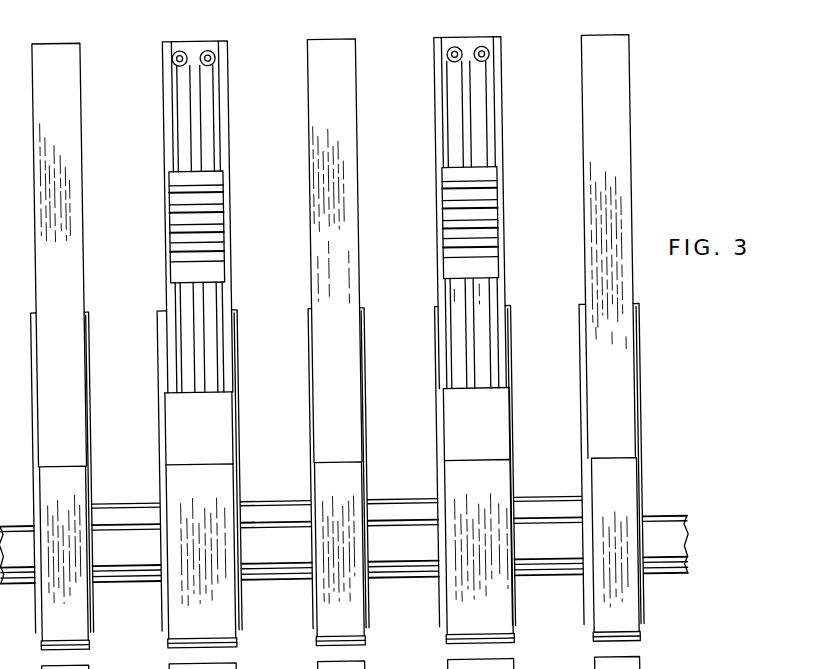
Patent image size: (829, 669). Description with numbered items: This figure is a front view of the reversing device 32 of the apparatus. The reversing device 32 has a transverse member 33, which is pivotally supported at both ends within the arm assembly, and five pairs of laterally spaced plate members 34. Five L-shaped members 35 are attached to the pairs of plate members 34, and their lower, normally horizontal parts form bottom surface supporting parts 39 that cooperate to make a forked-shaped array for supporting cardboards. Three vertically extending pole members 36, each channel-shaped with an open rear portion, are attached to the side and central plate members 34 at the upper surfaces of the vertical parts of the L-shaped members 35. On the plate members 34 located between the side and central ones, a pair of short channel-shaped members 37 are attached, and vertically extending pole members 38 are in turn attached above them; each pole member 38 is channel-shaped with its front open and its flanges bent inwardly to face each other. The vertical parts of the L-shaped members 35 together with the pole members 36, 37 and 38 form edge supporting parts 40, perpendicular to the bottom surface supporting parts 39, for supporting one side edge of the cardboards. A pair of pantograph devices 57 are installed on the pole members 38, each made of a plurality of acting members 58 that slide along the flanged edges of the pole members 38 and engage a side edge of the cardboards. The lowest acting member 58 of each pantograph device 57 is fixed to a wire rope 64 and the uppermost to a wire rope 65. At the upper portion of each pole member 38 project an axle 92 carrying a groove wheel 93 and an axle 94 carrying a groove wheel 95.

The reversing device 32 is at (563, 26).
The transverse member 33 is at (665, 517).
The plate members 34 is at (38, 427).
The L-shaped members 35 is at (78, 487).
The pole members 36 is at (83, 205).
The short channel-shaped members 37 is at (220, 436).
The pole members 38 is at (229, 135).
The bottom surface supporting parts 39 is at (63, 642).
The edge supporting parts 40 is at (356, 183).
The pantograph devices 57 is at (226, 176).
The acting members 58 is at (221, 218).
The wire rope 64 is at (477, 150).
The wire rope 65 is at (463, 128).
The axle 92 is at (173, 56).
The groove wheel 93 is at (182, 67).
The axle 94 is at (222, 56).
The groove wheel 95 is at (213, 66).